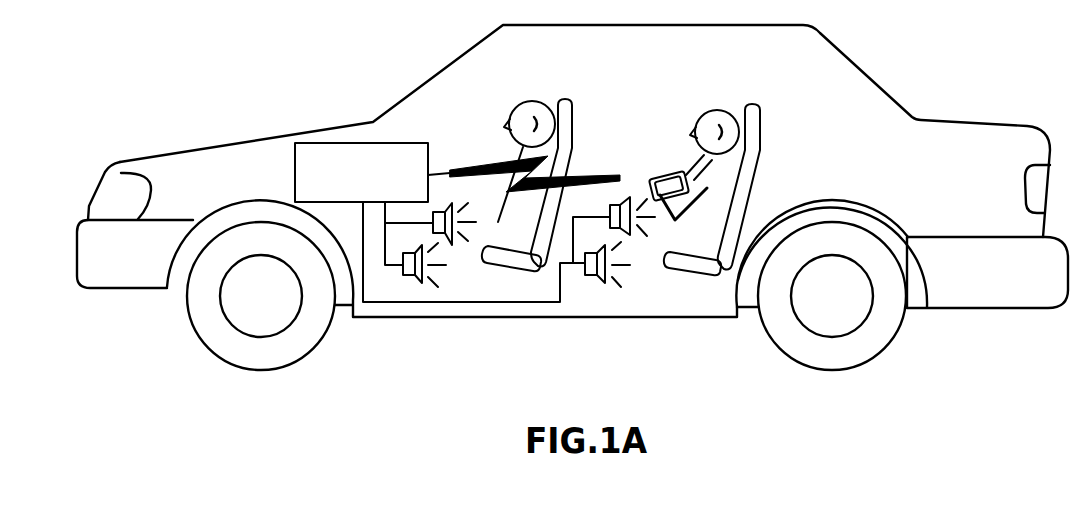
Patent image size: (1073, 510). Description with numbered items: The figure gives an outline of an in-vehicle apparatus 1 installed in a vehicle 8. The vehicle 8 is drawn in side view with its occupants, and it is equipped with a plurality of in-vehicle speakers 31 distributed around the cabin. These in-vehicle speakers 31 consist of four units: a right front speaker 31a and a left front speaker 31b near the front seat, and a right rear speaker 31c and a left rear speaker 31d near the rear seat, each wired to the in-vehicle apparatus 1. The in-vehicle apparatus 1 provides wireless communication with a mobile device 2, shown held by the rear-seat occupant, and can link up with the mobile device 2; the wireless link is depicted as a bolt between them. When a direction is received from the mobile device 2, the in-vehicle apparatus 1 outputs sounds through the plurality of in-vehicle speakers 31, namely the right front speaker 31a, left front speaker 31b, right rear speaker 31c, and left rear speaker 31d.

The in-vehicle apparatus 1 is at (355, 140).
The mobile device 2 is at (653, 172).
The vehicle 8 is at (942, 152).
The in-vehicle speakers 31 is at (518, 236).
The right front speaker 31a is at (448, 201).
The left front speaker 31b is at (422, 283).
The right rear speaker 31c is at (618, 197).
The left rear speaker 31d is at (606, 283).